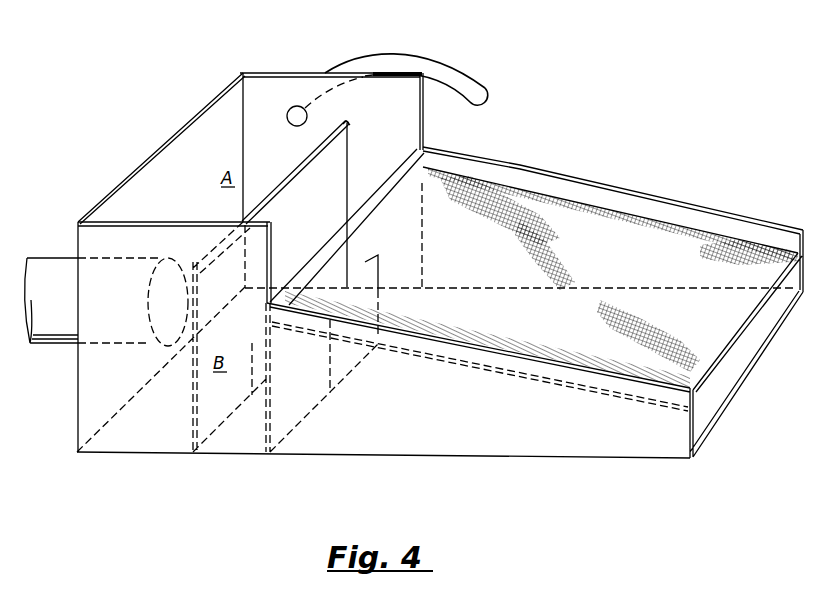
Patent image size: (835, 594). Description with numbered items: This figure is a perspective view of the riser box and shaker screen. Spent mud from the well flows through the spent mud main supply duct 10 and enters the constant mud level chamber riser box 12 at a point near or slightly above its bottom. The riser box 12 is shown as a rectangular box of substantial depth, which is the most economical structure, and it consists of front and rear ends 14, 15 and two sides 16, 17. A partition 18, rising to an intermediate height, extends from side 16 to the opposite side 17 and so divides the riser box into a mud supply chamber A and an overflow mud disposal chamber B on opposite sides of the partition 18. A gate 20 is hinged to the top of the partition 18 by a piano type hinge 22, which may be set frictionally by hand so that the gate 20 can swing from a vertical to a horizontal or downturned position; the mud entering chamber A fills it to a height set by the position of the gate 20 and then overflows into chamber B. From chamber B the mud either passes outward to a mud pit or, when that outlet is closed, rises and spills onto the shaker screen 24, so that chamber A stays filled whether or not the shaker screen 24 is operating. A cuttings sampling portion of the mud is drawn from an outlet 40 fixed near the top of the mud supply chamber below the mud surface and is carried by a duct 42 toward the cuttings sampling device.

The spent mud main supply duct 10 is at (48, 268).
The constant mud level chamber riser box 12 is at (280, 69).
The front end 14 is at (205, 106).
The rear end 15 is at (291, 400).
The side 16 is at (150, 220).
The side 17 is at (391, 73).
The partition 18 is at (350, 172).
The gate 20 is at (309, 156).
The piano type hinge 22 is at (350, 140).
The shaker screen 24 is at (619, 275).
The outlet 40 is at (291, 110).
The duct 42 is at (456, 76).